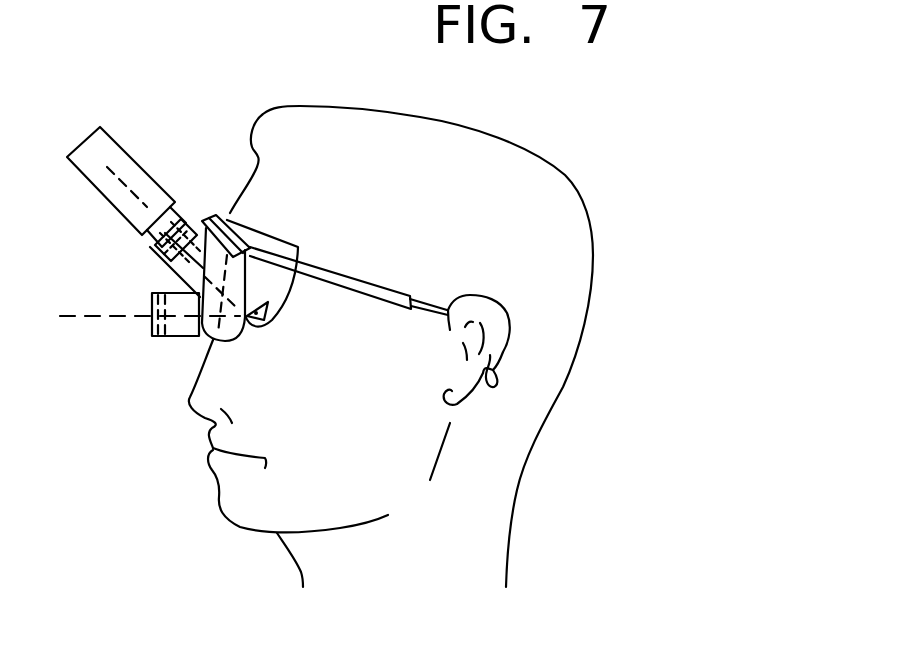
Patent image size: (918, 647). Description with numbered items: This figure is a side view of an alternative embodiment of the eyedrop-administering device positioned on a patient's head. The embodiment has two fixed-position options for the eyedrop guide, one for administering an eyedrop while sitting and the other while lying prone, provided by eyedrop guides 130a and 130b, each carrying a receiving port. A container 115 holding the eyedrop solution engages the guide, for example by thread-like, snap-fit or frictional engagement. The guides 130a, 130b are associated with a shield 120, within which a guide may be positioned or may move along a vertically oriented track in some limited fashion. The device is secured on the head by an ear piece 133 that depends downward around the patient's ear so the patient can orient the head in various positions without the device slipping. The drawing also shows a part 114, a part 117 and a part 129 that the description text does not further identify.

The container 115 is at (107, 150).
The hinge block 117 is at (174, 209).
The mounting plate 114 is at (208, 214).
The eyedrop guide 130a is at (172, 262).
The eyedrop guide 130b is at (177, 337).
The shield 120 is at (235, 341).
The temple arm 129 is at (360, 296).
The ear piece 133 is at (497, 369).